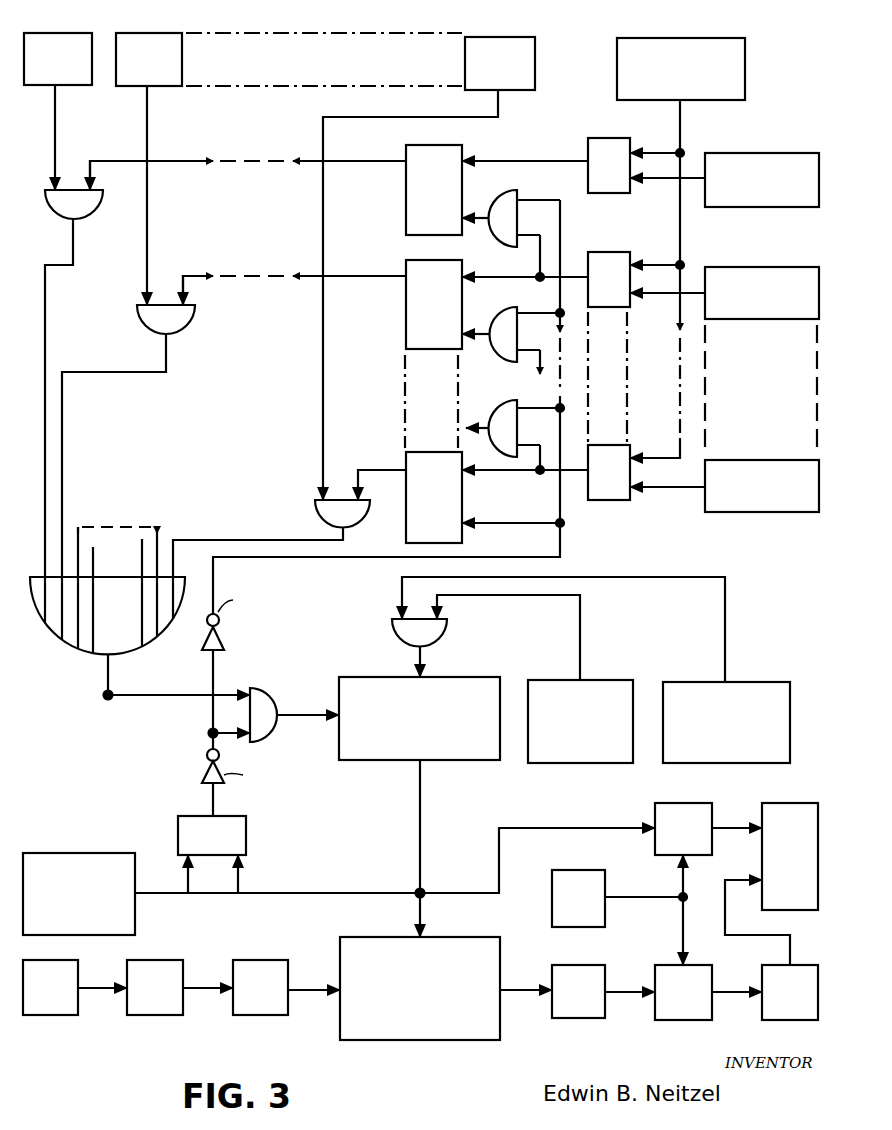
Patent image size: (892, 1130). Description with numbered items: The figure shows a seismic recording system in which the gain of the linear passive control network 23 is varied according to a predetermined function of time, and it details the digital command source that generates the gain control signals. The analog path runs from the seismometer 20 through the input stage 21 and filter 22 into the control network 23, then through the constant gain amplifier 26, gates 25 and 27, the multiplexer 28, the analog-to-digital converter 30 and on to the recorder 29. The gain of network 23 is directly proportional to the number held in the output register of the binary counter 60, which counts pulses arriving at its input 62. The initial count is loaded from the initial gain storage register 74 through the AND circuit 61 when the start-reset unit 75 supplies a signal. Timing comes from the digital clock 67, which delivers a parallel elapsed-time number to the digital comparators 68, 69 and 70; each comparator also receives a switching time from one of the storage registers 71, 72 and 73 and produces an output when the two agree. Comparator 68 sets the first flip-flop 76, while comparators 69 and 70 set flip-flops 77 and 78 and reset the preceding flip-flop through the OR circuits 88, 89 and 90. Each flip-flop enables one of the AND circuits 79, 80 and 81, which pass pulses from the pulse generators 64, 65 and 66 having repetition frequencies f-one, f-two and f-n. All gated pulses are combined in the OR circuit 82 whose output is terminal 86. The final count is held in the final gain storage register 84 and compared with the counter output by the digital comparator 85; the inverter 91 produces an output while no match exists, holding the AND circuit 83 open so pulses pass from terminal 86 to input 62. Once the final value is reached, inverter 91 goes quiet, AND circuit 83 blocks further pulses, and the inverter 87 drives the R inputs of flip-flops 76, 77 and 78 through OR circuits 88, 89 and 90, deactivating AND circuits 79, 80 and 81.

The seismometer 20 is at (55, 1005).
The input stage 21 is at (143, 1005).
The filter 22 is at (248, 1005).
The linear passive control network 23 is at (405, 1025).
The gate 25 is at (663, 808).
The constant gain amplifier 26 is at (580, 1015).
The gate 27 is at (683, 1012).
The multiplexer 28 is at (573, 872).
The recorder 29 is at (780, 810).
The analog-to-digital converter 30 is at (782, 1015).
The binary counter 60 is at (452, 677).
The AND circuit 61 is at (390, 633).
The input of binary counter 62 is at (300, 712).
The pulse generator 64 is at (63, 32).
The pulse generator 65 is at (166, 33).
The pulse generator 66 is at (516, 37).
The digital clock 67 is at (674, 38).
The digital comparator 68 is at (606, 138).
The digital comparator 69 is at (610, 255).
The digital comparator 70 is at (604, 500).
The storage register 71 is at (768, 153).
The storage register 72 is at (764, 267).
The storage register 73 is at (763, 512).
The initial gain storage register 74 is at (760, 685).
The start-reset unit 75 is at (611, 685).
The flip-flop 76 is at (405, 200).
The flip-flop 77 is at (405, 322).
The flip-flop 78 is at (404, 456).
The AND circuit 79 is at (95, 215).
The AND circuit 80 is at (182, 325).
The AND circuit 81 is at (318, 502).
The OR circuit 82 is at (66, 640).
The AND circuit 83 is at (272, 695).
The final gain storage register 84 is at (72, 853).
The digital comparator 85 is at (246, 825).
The terminal 86 is at (106, 698).
The inverter 87 is at (222, 640).
The OR circuit 88 is at (502, 190).
The OR circuit 89 is at (504, 307).
The OR circuit 90 is at (500, 408).
The inverter 91 is at (202, 770).